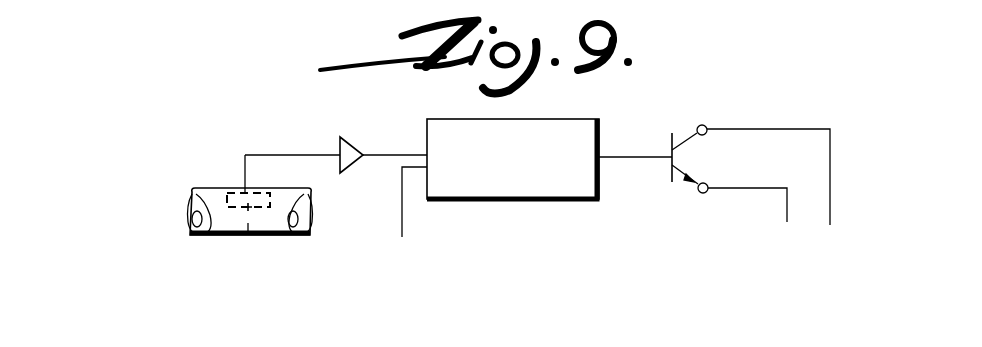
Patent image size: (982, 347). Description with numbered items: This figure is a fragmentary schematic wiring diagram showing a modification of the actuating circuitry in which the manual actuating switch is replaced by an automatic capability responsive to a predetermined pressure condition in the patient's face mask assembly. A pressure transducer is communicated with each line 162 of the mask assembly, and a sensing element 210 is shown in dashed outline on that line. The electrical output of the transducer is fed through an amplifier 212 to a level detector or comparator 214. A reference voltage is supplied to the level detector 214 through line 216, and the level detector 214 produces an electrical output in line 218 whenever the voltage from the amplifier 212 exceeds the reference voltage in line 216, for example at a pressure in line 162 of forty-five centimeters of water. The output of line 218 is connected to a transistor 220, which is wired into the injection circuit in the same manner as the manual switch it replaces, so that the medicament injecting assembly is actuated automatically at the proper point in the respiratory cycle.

The line 162 is at (227, 227).
The sensor 210 is at (250, 250).
The amplifier 212 is at (384, 111).
The level detector or comparator 214 is at (517, 188).
The line 216 is at (402, 208).
The line 218 is at (633, 162).
The transistor 220 is at (672, 157).